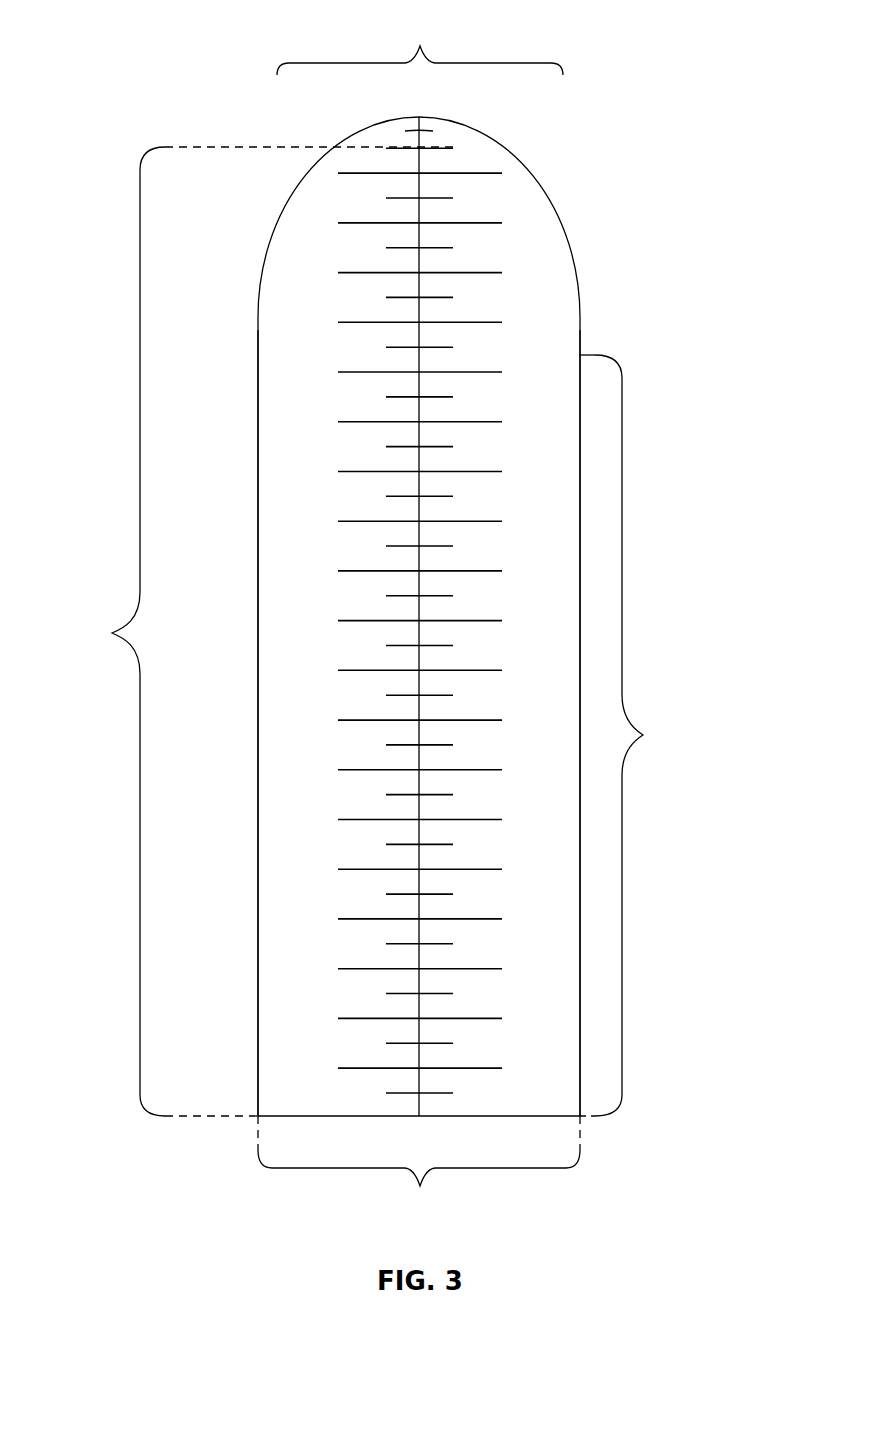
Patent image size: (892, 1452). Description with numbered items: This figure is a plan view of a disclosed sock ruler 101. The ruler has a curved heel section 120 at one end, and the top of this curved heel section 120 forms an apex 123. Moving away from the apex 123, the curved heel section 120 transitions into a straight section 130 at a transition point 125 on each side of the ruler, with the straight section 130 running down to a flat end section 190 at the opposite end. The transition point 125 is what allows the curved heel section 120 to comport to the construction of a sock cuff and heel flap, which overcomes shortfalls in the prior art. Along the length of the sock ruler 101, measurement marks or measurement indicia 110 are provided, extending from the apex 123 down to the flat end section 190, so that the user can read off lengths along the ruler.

The sock ruler 101 is at (245, 305).
The measurement indicia 110 is at (260, 631).
The curved heel section 120 is at (420, 45).
The apex 123 is at (420, 117).
The transition point 125 is at (258, 384).
The straight section 130 is at (639, 735).
The flat end section 190 is at (419, 1172).